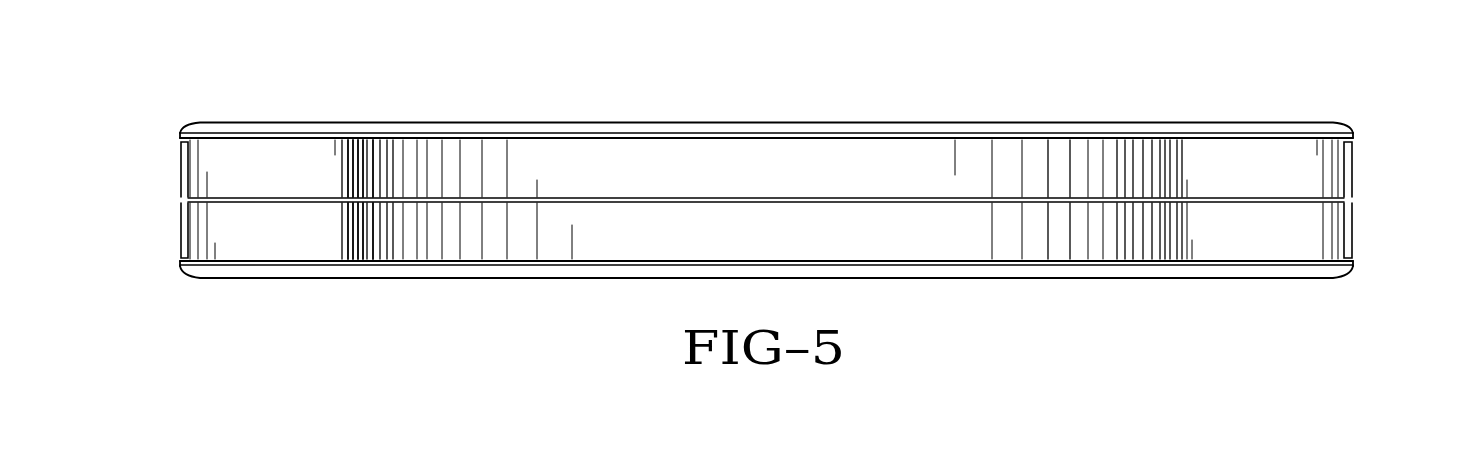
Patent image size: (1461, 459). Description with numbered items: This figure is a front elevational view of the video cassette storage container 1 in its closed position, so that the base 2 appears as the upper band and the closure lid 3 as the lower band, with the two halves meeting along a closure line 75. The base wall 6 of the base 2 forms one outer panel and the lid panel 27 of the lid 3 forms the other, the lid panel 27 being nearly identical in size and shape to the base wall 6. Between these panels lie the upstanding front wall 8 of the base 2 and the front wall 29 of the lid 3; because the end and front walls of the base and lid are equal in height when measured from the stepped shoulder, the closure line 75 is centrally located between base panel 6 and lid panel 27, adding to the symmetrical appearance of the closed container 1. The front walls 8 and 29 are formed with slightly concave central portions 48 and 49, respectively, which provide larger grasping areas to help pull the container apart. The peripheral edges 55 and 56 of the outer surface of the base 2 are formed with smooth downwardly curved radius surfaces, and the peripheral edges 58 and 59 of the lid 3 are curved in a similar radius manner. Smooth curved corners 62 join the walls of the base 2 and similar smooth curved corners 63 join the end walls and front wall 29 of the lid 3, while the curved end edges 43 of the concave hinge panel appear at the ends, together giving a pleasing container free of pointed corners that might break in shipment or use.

The video cassette storage container 1 is at (766, 192).
The base 2 is at (765, 97).
The closure lid 3 is at (765, 304).
The base wall 6 is at (968, 120).
The front wall 8 is at (279, 158).
The lid panel 27 is at (1058, 278).
The front wall 29 is at (284, 231).
The curved end edges 43 is at (766, 139).
The concave central portion 48 is at (843, 172).
The concave central portion 49 is at (594, 231).
The peripheral edges 55 is at (193, 127).
The peripheral edges 56 is at (777, 128).
The peripheral edges 58 is at (191, 273).
The peripheral edges 59 is at (511, 272).
The curved corners 62 is at (197, 163).
The curved corners 63 is at (197, 238).
The closure line 75 is at (710, 200).